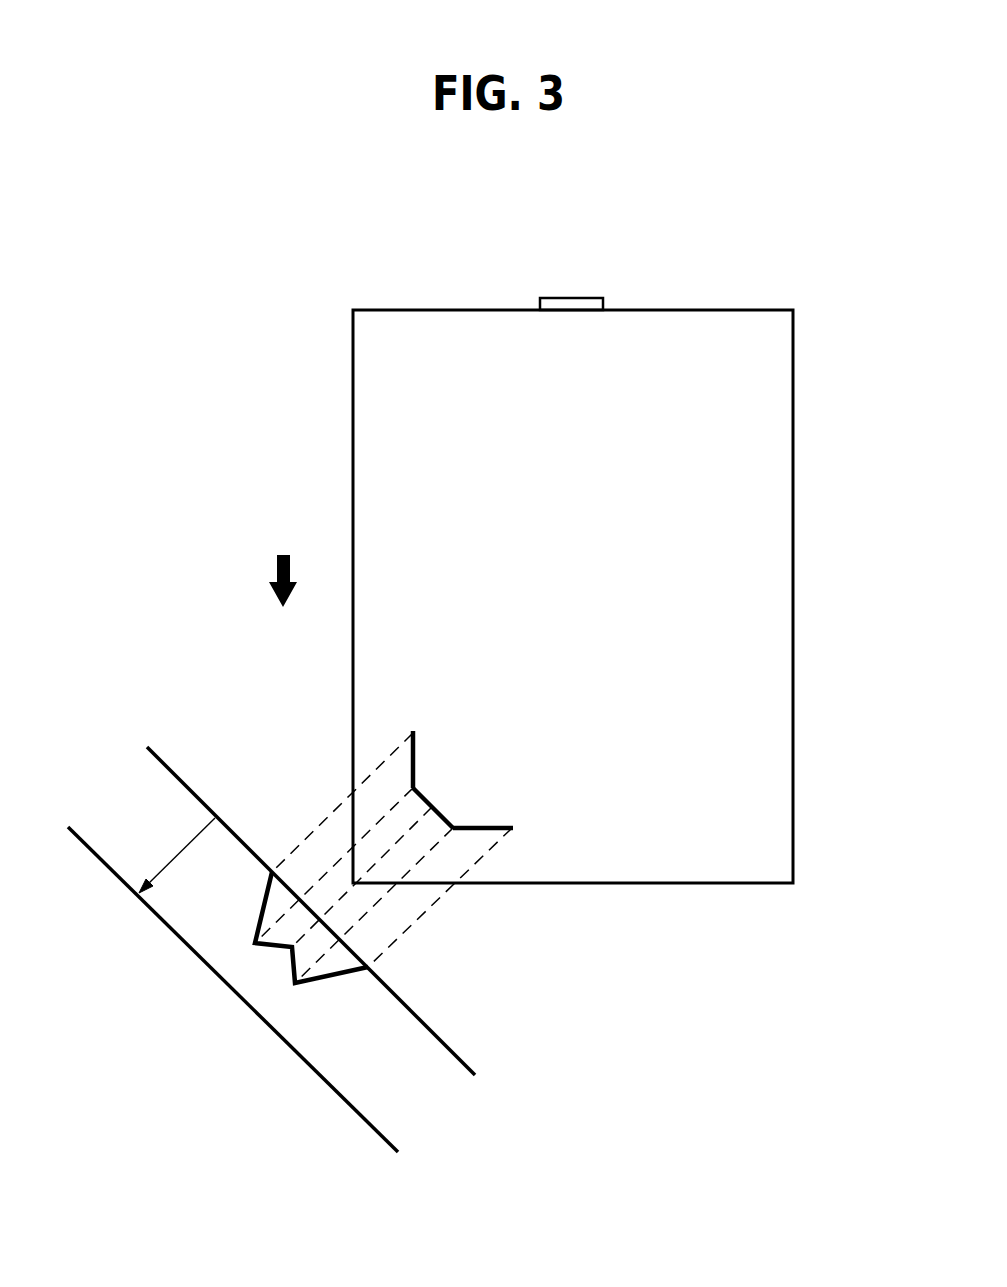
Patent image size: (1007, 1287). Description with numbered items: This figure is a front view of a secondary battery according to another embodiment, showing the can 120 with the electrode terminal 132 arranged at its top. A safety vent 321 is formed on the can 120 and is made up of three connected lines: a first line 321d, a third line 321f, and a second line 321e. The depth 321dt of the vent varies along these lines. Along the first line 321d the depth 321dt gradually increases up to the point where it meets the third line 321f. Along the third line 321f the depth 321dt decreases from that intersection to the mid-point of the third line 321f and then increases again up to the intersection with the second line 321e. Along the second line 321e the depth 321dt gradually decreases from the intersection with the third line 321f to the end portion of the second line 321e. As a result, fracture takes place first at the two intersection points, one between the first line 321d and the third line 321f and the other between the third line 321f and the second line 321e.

The can 120 is at (758, 562).
The electrode terminal 132 is at (570, 298).
The safety vent 321 is at (559, 877).
The first line 321d is at (403, 778).
The third line 321f is at (438, 817).
The second line 321e is at (490, 832).
The depth 321dt is at (161, 850).